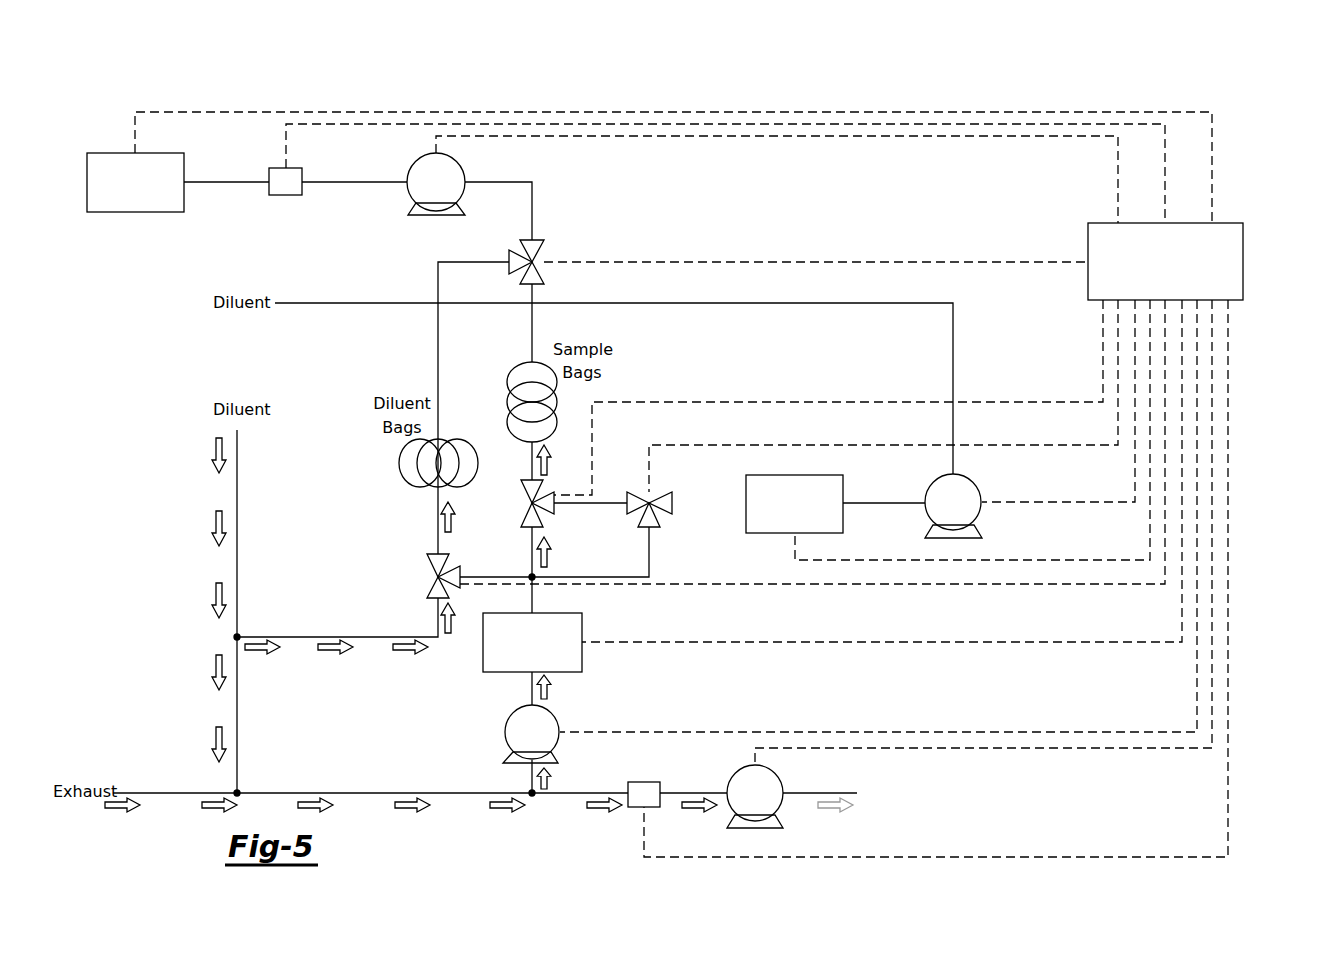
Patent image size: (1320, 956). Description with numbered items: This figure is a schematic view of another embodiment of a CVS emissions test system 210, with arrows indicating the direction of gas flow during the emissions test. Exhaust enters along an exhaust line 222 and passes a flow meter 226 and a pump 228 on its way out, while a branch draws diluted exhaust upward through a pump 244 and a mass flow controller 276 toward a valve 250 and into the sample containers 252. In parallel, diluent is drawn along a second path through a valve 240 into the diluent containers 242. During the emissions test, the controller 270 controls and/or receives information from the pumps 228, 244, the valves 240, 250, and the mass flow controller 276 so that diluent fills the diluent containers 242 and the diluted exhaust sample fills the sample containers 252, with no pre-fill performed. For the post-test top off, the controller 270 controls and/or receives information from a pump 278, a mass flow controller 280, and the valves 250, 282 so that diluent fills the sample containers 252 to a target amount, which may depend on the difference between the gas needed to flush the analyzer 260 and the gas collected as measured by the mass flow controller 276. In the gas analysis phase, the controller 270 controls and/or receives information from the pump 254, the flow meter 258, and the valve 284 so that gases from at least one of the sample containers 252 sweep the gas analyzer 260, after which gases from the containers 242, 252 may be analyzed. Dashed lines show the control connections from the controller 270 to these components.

The CVS emissions test system 210 is at (1238, 94).
The exhaust line 222 is at (371, 793).
The flow meter 226 is at (641, 782).
The pump 228 is at (739, 771).
The valve 240 is at (432, 574).
The diluent containers 242 is at (401, 485).
The pump 244 is at (553, 712).
The valve 250 is at (526, 500).
The sample containers 252 is at (522, 366).
The pump 254 is at (416, 162).
The flow meter 258 is at (277, 168).
The gas analyzer 260 is at (121, 153).
The controller 270 is at (1243, 262).
The mass flow controller 276 is at (582, 623).
The pump 278 is at (969, 480).
The mass flow controller 280 is at (843, 485).
The valve 282 is at (672, 512).
The valve 284 is at (537, 239).